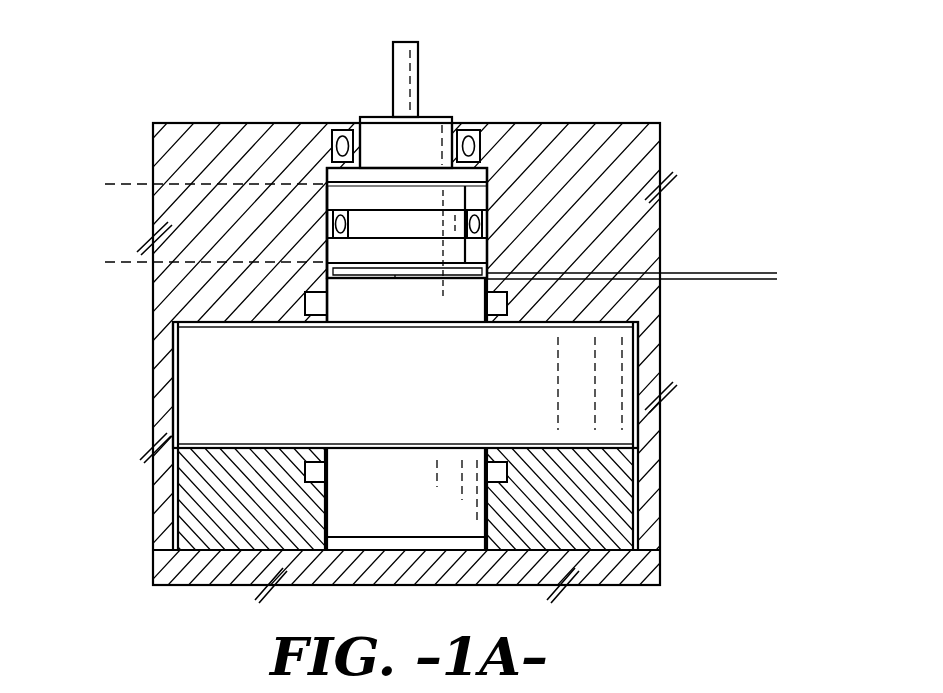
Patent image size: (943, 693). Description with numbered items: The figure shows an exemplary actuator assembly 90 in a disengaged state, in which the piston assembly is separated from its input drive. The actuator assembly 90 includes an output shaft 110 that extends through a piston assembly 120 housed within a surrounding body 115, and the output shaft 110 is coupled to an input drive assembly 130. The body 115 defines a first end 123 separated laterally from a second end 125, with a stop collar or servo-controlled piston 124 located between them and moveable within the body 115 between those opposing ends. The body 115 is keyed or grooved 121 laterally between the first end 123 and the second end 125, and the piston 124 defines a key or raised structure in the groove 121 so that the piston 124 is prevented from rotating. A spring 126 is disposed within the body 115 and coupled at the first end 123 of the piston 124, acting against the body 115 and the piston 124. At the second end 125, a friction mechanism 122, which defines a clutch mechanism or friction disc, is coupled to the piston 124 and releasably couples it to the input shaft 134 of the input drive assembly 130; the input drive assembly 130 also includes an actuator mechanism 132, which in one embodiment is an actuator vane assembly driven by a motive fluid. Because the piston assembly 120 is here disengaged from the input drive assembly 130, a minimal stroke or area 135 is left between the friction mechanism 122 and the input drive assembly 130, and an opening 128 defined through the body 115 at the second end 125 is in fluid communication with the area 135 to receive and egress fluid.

The actuator assembly 90 is at (262, 54).
The output shaft 110 is at (419, 86).
The body 115 is at (323, 200).
The piston assembly 120 is at (403, 222).
The groove 121 is at (465, 191).
The friction mechanism 122 is at (455, 268).
The first end 123 is at (488, 164).
The stop collar or servo-controlled piston 124 is at (105, 184).
The second end 125 is at (320, 266).
The spring 126 is at (369, 176).
The opening 128 is at (489, 263).
The input drive assembly 130 is at (166, 402).
The actuator mechanism 132 is at (432, 395).
The input shaft 134 is at (432, 318).
The area 135 is at (763, 280).